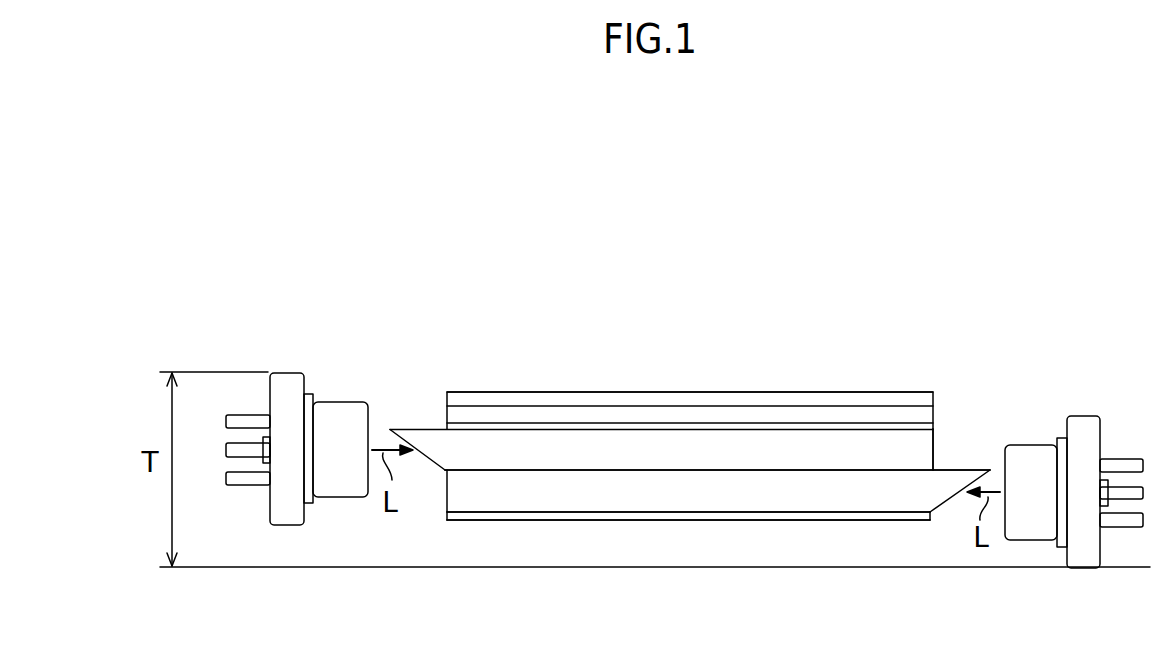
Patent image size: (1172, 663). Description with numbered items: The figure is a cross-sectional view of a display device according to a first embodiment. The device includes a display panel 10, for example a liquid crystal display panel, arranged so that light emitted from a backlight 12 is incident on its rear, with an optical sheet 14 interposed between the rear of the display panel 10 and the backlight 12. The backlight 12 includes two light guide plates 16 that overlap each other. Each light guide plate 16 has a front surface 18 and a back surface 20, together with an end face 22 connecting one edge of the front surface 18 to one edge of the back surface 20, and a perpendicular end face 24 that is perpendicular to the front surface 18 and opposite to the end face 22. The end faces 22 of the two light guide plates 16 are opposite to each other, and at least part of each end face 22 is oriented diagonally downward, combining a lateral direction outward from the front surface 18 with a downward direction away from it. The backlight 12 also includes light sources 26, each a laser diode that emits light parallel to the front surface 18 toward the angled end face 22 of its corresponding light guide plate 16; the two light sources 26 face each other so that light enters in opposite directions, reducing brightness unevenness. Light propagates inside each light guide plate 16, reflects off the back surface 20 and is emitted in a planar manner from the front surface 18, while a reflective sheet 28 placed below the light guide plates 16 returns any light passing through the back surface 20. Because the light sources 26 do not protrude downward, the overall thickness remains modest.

The display panel 10 is at (942, 390).
The backlight 12 is at (693, 433).
The optical sheet 14 is at (808, 425).
The light guide plate 16 is at (737, 449).
The front surface 18 is at (597, 429).
The back surface 20 is at (617, 471).
The end face 22 is at (418, 455).
The perpendicular end face 24 is at (447, 500).
The light source 26 is at (422, 331).
The reflective sheet 28 is at (527, 521).